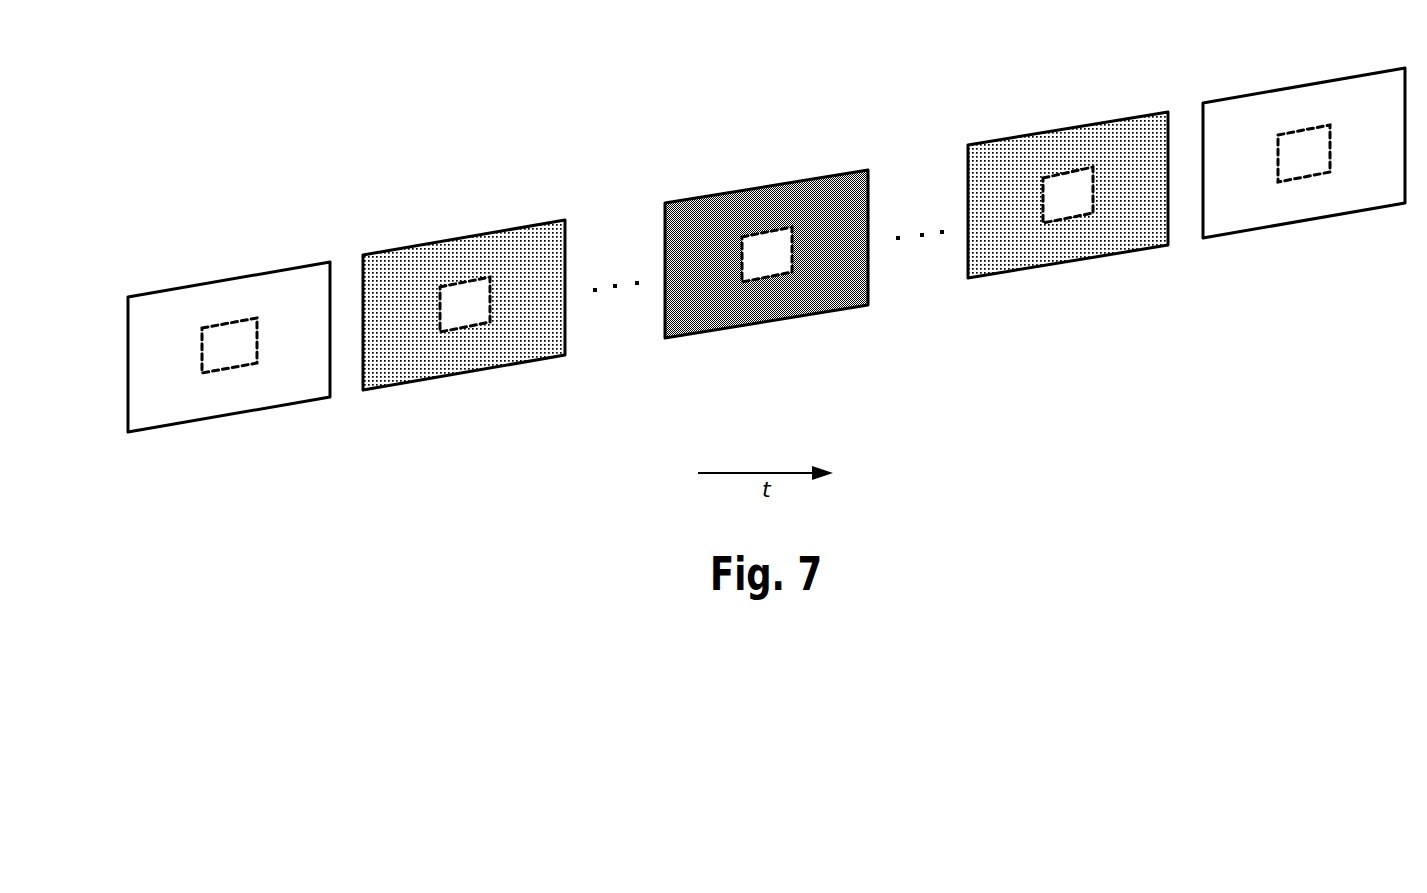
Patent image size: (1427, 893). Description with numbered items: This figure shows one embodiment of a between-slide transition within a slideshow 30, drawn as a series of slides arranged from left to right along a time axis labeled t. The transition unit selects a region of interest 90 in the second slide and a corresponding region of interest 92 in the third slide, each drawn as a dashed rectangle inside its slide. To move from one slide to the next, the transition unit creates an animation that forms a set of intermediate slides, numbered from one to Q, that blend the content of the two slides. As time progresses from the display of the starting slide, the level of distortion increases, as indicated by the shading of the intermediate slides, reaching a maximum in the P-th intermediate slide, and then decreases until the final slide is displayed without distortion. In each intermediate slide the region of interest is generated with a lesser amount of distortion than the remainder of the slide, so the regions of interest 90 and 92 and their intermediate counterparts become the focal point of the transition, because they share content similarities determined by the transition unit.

The slideshow 30 is at (1160, 483).
The region of interest 90 is at (237, 322).
The region of interest 92 is at (1313, 127).